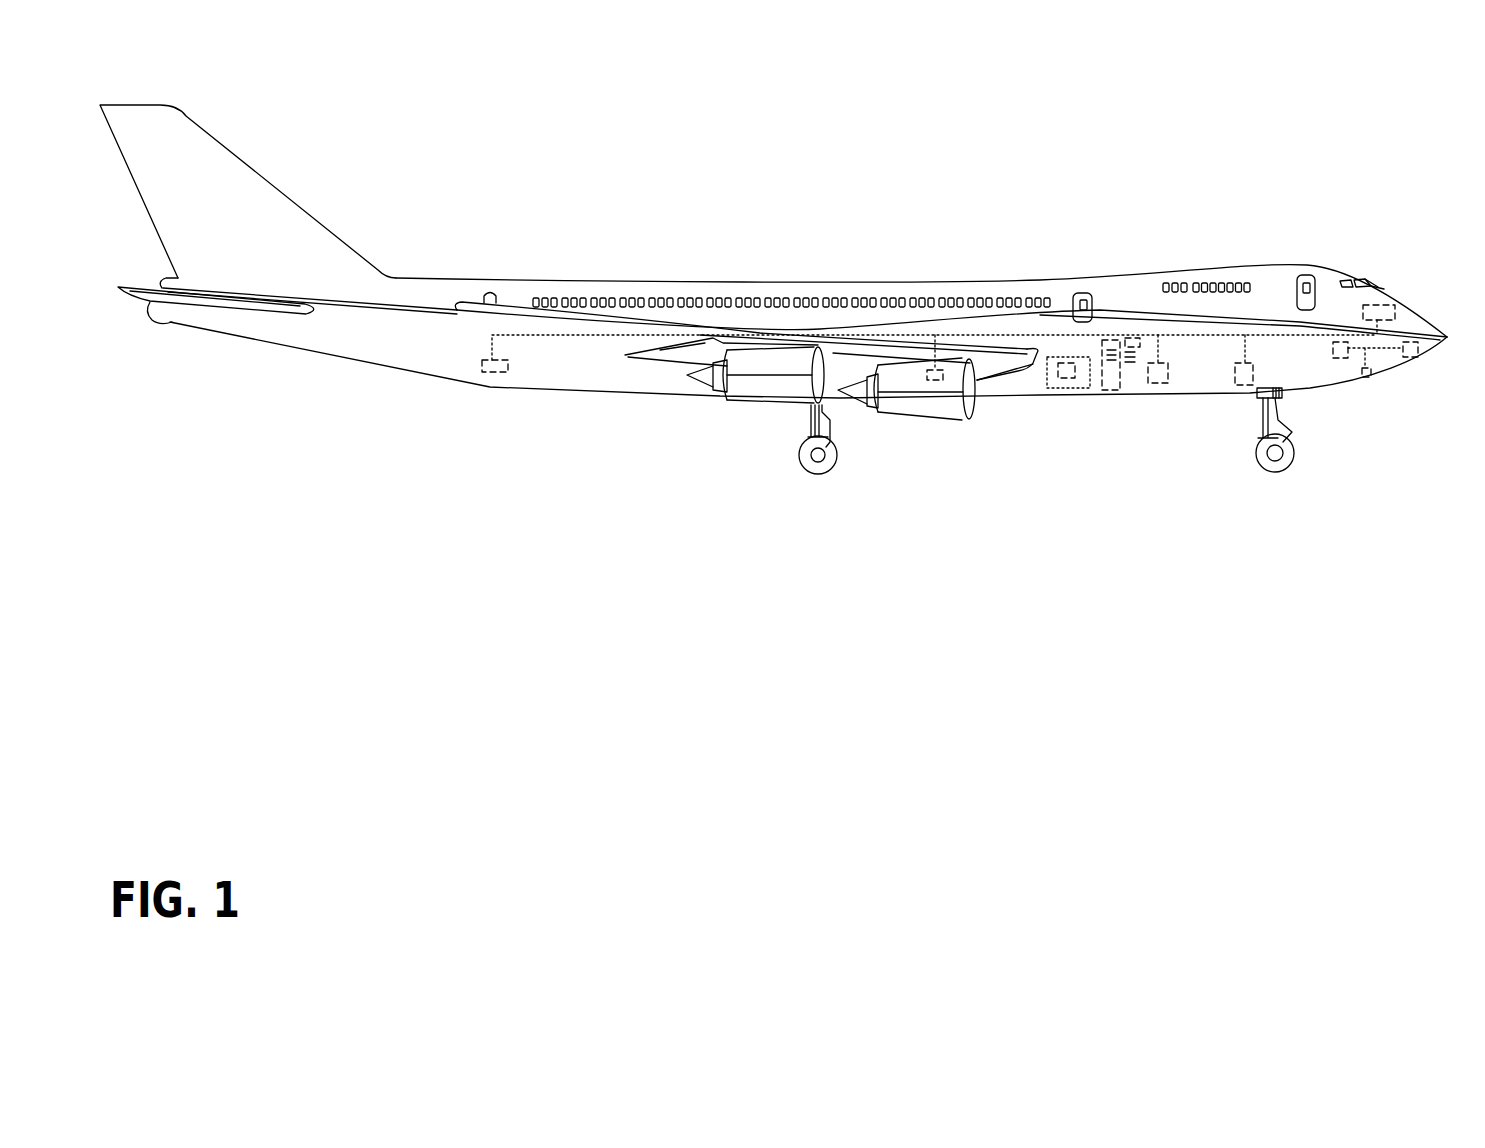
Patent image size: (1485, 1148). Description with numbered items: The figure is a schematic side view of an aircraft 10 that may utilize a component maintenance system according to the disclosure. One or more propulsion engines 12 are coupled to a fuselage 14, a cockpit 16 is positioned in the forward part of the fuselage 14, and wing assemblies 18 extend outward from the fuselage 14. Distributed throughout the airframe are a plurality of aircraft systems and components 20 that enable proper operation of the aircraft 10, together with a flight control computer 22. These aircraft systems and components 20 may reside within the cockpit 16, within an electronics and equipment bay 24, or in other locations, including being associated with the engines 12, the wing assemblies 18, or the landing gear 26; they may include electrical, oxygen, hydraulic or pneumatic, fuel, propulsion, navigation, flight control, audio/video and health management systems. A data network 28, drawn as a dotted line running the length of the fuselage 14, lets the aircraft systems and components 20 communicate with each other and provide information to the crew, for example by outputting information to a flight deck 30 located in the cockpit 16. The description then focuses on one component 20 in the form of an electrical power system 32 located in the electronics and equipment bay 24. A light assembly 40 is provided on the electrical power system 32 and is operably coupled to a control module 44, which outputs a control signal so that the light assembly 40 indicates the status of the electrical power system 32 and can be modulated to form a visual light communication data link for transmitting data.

The aircraft 10 is at (1283, 264).
The propulsion engine 12 is at (772, 390).
The fuselage 14 is at (1083, 278).
The cockpit 16 is at (1377, 285).
The wing assembly 18 is at (592, 322).
The aircraft systems and components 20 is at (493, 383).
The flight control computer 22 is at (1425, 358).
The electronics and equipment bay 24 is at (1122, 395).
The landing gear 26 is at (822, 468).
The data network 28 is at (1197, 335).
The flight deck 30 is at (1395, 308).
The electrical power system 32 is at (1147, 350).
The light assembly 40 is at (1118, 338).
The control module 44 is at (1152, 335).